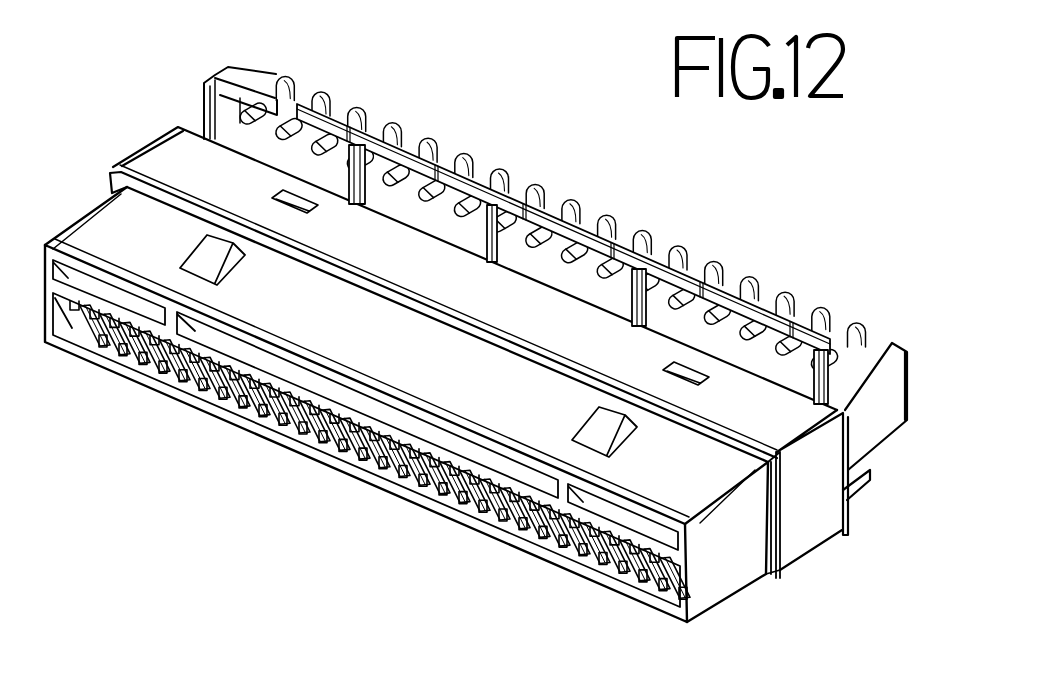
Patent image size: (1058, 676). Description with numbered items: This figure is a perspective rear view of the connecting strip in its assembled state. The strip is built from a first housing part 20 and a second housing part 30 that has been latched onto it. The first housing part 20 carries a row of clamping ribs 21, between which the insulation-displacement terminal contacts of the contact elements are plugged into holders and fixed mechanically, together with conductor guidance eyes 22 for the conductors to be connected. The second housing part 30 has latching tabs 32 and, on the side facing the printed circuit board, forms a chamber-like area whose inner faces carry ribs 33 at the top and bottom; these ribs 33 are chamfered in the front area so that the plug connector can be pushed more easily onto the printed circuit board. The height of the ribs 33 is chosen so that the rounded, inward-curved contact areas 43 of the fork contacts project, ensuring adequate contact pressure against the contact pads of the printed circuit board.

The first housing part 20 is at (883, 401).
The clamping ribs 21 is at (461, 158).
The conductor guidance eyes 22 is at (222, 63).
The second housing part 30 is at (735, 567).
The latching tabs 32 is at (613, 433).
The ribs 33 is at (213, 403).
The contact areas 43 is at (138, 348).